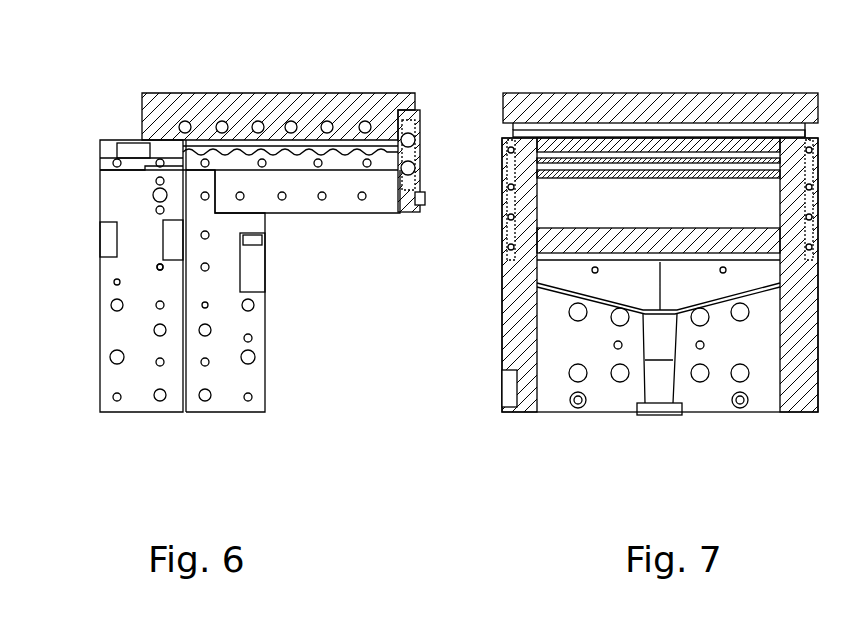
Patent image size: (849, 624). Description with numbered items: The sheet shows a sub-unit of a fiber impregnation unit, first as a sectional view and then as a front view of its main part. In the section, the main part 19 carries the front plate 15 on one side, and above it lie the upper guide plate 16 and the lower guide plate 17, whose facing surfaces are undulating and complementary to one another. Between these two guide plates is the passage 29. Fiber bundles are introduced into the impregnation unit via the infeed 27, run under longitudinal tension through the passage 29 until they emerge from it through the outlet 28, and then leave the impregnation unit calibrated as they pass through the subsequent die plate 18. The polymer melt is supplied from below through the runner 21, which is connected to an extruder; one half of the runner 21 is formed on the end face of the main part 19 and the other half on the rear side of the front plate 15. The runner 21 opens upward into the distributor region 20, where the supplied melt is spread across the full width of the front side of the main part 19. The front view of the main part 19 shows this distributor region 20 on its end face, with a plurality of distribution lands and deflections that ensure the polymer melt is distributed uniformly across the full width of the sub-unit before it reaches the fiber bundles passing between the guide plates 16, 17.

In FIG. 6, the front plate 15 is at (115, 193).
In FIG. 6, the upper guide plate 16 is at (270, 93).
In FIG. 7, the upper guide plate 16 is at (638, 92).
In FIG. 6, the lower guide plate 17 is at (340, 163).
In FIG. 6, the die plate 18 is at (419, 122).
In FIG. 6, the main part 19 is at (243, 323).
In FIG. 7, the main part 19 is at (558, 327).
In FIG. 7, the distributor region 20 is at (585, 278).
In FIG. 6, the runner 21 is at (180, 263).
In FIG. 7, the runner 21 is at (660, 382).
In FIG. 6, the infeed 27 is at (148, 157).
In FIG. 7, the infeed 27 is at (715, 133).
In FIG. 6, the outlet 28 is at (393, 150).
In FIG. 6, the passage 29 is at (218, 150).